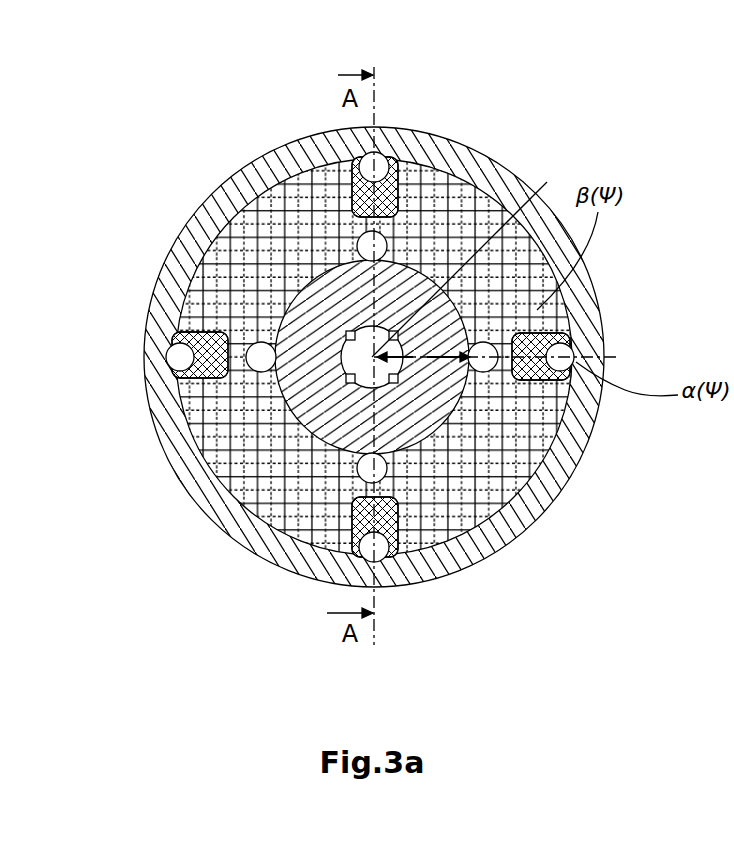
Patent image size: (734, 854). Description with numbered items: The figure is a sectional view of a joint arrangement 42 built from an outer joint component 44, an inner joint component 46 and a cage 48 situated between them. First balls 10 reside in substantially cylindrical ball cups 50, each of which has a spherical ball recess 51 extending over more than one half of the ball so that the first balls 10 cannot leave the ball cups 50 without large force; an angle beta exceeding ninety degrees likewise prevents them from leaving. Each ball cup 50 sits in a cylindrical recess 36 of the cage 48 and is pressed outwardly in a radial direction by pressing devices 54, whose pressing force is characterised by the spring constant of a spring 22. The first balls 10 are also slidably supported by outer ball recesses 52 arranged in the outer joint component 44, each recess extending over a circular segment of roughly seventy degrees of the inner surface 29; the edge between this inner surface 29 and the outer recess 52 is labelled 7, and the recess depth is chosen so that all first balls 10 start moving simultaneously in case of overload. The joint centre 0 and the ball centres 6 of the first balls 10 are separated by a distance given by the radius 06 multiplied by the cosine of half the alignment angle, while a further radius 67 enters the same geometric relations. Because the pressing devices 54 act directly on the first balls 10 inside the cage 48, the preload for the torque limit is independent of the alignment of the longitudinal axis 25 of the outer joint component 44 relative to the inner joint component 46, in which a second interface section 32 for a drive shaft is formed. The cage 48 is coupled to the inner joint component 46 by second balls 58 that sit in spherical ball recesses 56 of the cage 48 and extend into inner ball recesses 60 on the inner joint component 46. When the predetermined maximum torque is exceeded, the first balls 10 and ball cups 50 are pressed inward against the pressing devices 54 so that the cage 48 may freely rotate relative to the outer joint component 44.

The joint arrangement 42 is at (147, 106).
The ball recess 51 is at (340, 160).
The outer ball recess 52 is at (380, 152).
The outer joint component 44 is at (398, 198).
The cylindrical recess 36 is at (398, 188).
The radius r06 06 is at (547, 182).
The edge 7 is at (593, 302).
The radius r67 67 is at (565, 350).
The longitudinal axis 25 is at (733, 428).
The inner surface 29 is at (240, 173).
The second balls 58 is at (350, 162).
The cage 48 is at (290, 243).
The inner joint component 46 is at (290, 300).
The ball cup 50 is at (205, 332).
The first balls 10 is at (177, 362).
The spring 22 is at (258, 372).
The spherical ball recess 56 is at (340, 400).
The second interface section 32 is at (256, 372).
The pressing devices 54 is at (340, 520).
The joint centre 0 is at (385, 450).
The inner ball recesses 60 is at (530, 515).
The ball centres 6 is at (592, 452).